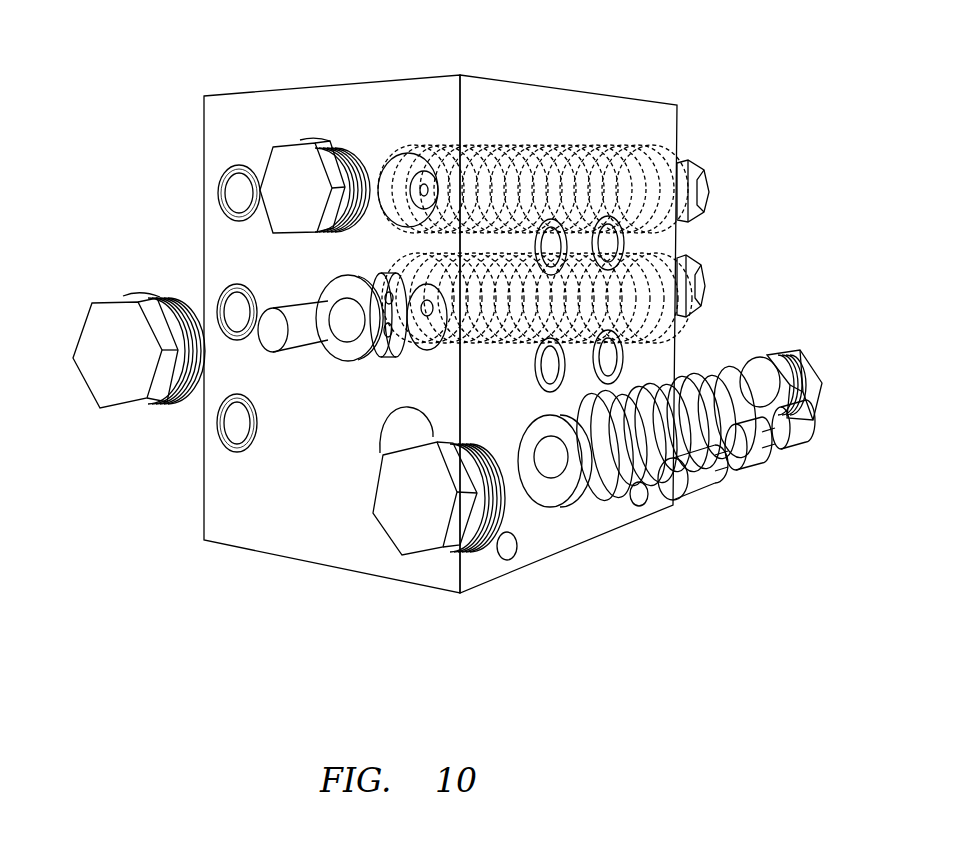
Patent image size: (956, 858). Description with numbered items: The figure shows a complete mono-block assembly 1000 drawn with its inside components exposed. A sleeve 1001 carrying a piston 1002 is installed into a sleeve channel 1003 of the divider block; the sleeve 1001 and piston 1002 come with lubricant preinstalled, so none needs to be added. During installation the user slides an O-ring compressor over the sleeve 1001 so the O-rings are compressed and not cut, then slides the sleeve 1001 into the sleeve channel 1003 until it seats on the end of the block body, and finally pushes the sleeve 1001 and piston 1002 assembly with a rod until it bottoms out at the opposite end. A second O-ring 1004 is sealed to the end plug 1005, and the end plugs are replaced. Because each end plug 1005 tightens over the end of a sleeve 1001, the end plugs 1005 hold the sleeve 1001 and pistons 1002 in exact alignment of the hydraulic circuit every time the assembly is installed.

The mono-block assembly 1000 is at (618, 543).
The sleeve 1001 is at (390, 364).
The piston 1002 is at (303, 339).
The sleeve channel 1003 is at (410, 155).
The second O-ring 1004 is at (165, 415).
The end plug 1005 is at (412, 535).